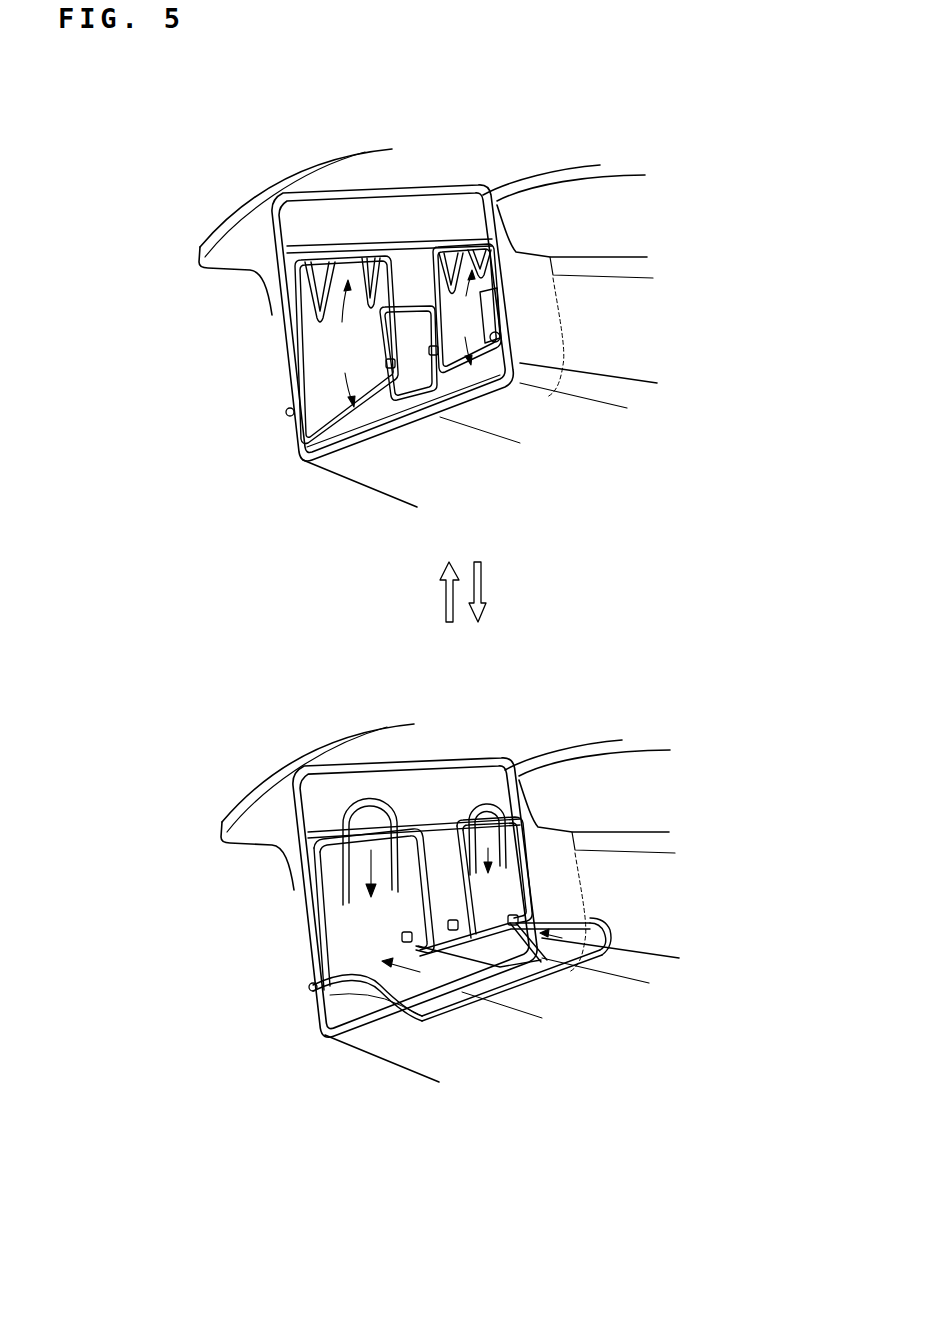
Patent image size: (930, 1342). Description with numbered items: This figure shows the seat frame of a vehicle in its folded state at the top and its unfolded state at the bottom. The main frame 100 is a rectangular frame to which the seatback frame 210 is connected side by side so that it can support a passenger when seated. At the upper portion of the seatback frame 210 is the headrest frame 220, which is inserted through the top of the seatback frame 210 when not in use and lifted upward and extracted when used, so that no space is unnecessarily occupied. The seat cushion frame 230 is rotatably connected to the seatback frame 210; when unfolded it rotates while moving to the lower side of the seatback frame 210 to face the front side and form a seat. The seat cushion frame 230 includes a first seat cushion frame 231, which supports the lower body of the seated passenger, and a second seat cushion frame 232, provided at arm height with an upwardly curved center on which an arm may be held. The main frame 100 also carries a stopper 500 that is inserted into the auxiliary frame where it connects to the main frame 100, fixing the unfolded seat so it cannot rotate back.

The main frame 100 is at (280, 330).
The seatback frame 210 is at (402, 282).
The headrest frame 220 is at (354, 260).
The seat cushion frame 230 is at (398, 432).
The first seat cushion frame 231 is at (353, 1010).
The second seat cushion frame 232 is at (393, 1007).
The stopper 500 is at (286, 412).